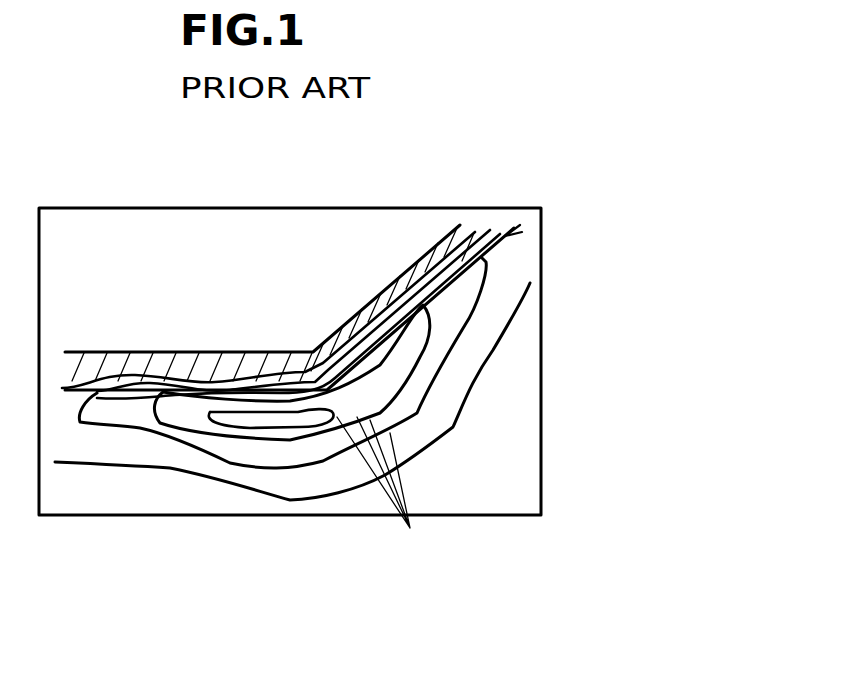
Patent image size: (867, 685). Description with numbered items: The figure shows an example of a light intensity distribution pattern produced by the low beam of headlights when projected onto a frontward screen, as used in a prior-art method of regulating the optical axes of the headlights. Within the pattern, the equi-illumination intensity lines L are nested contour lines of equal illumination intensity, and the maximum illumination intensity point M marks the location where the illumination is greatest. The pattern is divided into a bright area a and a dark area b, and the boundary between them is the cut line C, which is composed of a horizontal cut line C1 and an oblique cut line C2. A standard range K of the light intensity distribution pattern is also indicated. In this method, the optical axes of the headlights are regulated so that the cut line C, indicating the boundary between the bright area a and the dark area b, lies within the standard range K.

The cut line C is at (281, 268).
The horizontal cut line C1 is at (240, 385).
The oblique cut line C2 is at (374, 320).
The standard range K is at (520, 203).
The dark area b is at (299, 337).
The bright area a is at (258, 465).
The maximum illumination intensity point M is at (328, 423).
The equi-illumination intensity lines L is at (410, 528).